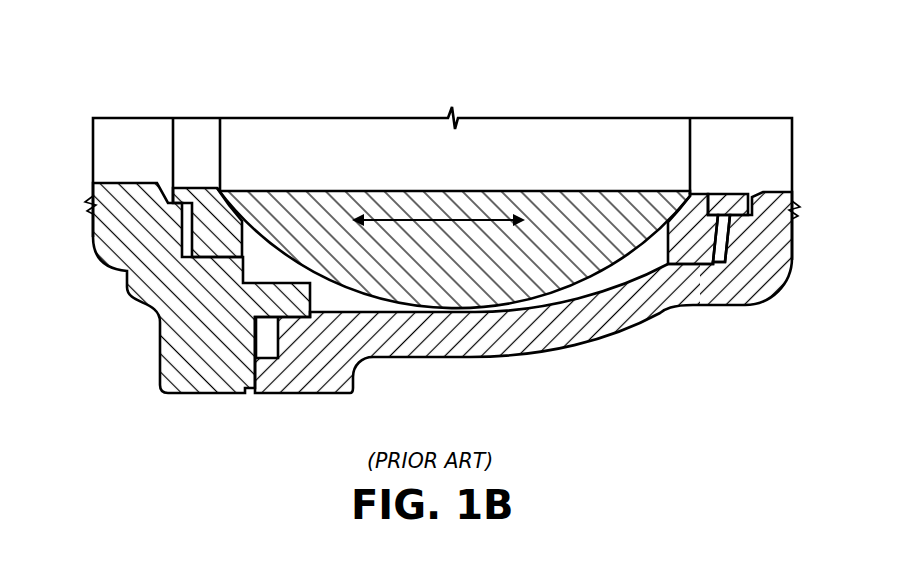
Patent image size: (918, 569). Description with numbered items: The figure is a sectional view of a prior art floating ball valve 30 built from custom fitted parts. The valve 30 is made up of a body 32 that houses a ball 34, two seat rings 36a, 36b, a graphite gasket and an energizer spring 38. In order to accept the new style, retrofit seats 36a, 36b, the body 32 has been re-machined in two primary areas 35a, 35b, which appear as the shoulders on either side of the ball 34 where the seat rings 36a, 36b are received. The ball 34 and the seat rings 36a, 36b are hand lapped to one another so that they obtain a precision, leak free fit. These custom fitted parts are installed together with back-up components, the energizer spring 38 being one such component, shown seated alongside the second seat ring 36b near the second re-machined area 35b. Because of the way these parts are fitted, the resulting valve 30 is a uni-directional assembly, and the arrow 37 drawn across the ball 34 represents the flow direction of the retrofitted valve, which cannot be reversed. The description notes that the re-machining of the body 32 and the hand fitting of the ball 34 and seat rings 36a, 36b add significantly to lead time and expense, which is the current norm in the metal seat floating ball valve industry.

The floating ball valve 30 is at (86, 252).
The body 32 is at (595, 320).
The ball 34 is at (468, 283).
The primary area 35a is at (190, 196).
The primary area 35b is at (752, 236).
The seat ring 36a is at (203, 233).
The seat ring 36b is at (680, 221).
The arrow 37 is at (411, 208).
The energizer spring 38 is at (730, 238).